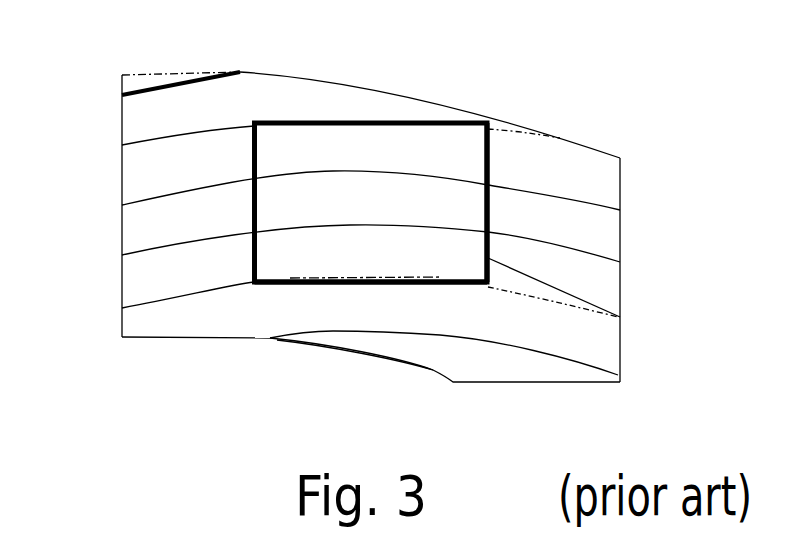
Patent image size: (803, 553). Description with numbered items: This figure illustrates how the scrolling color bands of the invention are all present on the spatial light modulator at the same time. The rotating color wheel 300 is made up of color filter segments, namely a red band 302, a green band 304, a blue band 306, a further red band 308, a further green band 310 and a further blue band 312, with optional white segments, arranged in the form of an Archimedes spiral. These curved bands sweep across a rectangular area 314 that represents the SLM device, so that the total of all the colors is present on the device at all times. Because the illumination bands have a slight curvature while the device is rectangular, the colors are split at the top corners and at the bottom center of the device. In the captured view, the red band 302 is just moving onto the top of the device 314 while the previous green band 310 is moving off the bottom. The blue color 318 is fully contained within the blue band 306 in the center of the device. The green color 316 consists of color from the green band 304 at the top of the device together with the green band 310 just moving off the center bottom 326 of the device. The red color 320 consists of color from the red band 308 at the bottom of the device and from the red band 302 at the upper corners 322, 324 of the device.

The rotating color wheel 300 is at (122, 72).
The red color filter segment 302 is at (138, 115).
The green color filter segment 304 is at (138, 167).
The blue color filter segment 306 is at (140, 225).
The red color filter segment 308 is at (140, 278).
The green color filter segment 310 is at (155, 323).
The blue color filter segment 312 is at (412, 348).
The area representing an SLM device 314 is at (373, 121).
The green color 316 is at (463, 157).
The blue color 318 is at (463, 207).
The red color 320 is at (463, 252).
The upper corner of the device 322 is at (260, 120).
The upper corner of the device 324 is at (477, 118).
The center bottom of the device 326 is at (382, 285).